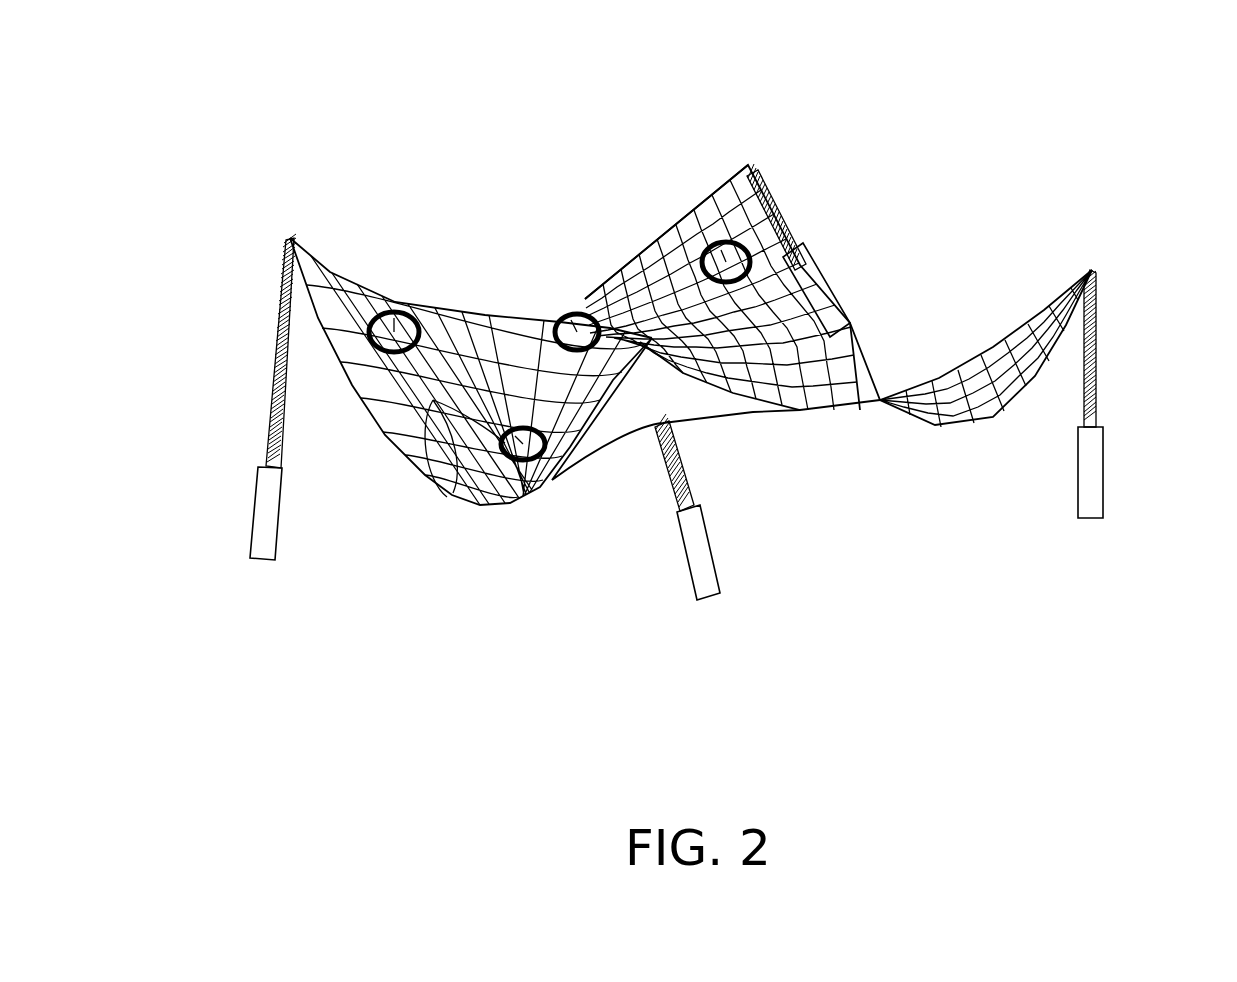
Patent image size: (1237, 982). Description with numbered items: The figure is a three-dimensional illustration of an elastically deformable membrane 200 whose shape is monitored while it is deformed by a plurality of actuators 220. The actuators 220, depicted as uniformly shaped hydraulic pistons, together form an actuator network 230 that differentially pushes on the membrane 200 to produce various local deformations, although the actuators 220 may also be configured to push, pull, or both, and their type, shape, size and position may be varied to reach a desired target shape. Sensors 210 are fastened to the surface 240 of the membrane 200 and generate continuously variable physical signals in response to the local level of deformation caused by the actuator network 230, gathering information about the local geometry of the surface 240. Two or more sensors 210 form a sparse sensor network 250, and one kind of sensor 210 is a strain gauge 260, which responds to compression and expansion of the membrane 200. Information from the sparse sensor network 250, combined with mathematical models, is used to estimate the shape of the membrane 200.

The elastically deformable membrane 200 is at (753, 412).
The sensors 210 is at (376, 252).
The actuators 220 is at (840, 310).
The actuator network 230 is at (1101, 283).
The surface 240 is at (738, 232).
The sparse sensor network 250 is at (698, 242).
The strain gauges 260 is at (450, 495).